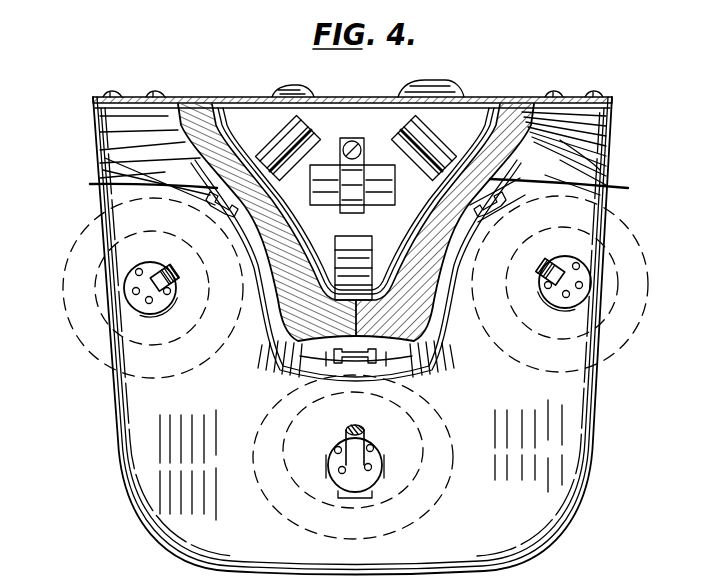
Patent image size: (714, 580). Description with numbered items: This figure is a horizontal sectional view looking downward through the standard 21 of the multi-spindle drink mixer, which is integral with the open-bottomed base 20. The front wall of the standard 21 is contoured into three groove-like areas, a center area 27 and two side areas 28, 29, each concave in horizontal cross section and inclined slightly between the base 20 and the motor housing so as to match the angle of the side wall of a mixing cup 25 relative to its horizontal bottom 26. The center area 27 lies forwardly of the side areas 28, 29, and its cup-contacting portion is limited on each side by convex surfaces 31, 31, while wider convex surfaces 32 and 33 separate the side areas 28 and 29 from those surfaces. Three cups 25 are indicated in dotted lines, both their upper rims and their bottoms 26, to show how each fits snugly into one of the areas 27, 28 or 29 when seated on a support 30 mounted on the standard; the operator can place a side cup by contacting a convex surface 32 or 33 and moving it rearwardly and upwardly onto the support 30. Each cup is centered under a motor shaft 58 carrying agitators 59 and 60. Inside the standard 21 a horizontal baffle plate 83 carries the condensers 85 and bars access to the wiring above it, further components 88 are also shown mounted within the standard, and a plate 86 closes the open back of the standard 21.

The base 20 is at (180, 541).
The standard 21 is at (565, 108).
The mixing cup 25 is at (67, 262).
The cup bottom 26 is at (93, 281).
The center groove-like area 27 is at (332, 368).
The side groove-like area 28 is at (138, 184).
The side groove-like area 29 is at (571, 187).
The cup support 30 is at (206, 202).
The convex surface 31 is at (298, 368).
The wider convex surface 32 is at (97, 160).
The wider convex surface 33 is at (573, 140).
The motor shaft 58 is at (168, 265).
The agitator 59 is at (134, 286).
The agitator 60 is at (132, 300).
The baffle plate 83 is at (345, 120).
The condenser 85 is at (330, 180).
The plate 86 is at (495, 103).
The connector block 88 is at (251, 146).